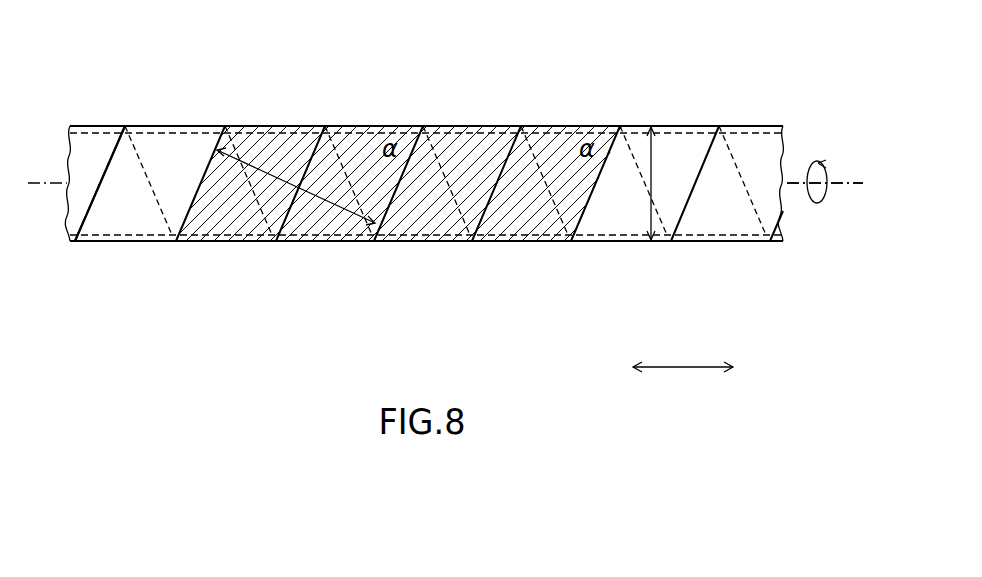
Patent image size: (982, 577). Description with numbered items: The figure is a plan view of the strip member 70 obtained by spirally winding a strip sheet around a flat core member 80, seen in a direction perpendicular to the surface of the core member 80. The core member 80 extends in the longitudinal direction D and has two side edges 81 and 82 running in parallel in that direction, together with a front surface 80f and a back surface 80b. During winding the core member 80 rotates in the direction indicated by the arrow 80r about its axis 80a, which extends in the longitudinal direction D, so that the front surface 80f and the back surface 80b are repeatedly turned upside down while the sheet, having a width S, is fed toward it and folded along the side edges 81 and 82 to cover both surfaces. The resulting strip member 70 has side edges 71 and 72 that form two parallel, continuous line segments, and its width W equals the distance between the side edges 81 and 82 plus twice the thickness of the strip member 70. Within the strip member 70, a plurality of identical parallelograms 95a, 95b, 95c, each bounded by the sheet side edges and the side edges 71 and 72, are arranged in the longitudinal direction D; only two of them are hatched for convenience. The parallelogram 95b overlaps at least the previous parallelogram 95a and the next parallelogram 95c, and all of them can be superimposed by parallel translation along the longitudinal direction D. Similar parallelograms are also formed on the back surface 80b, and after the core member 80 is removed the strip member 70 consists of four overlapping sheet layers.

The strip member 70 is at (678, 162).
The side edge of strip member 71 is at (740, 242).
The side edge of strip member 72 is at (745, 127).
The core member 80 is at (88, 153).
The front surface 80f is at (125, 177).
The back surface 80b is at (168, 167).
The axis 80a is at (842, 186).
The rotation direction arrow 80r is at (820, 163).
The side edge of core member 81 is at (130, 243).
The side edge of core member 82 is at (202, 126).
The parallelogram 95a is at (567, 155).
The parallelogram 95b is at (468, 155).
The parallelogram 95c is at (370, 152).
The width of sheet S is at (277, 176).
The width of strip member W is at (660, 183).
The longitudinal direction D is at (683, 377).